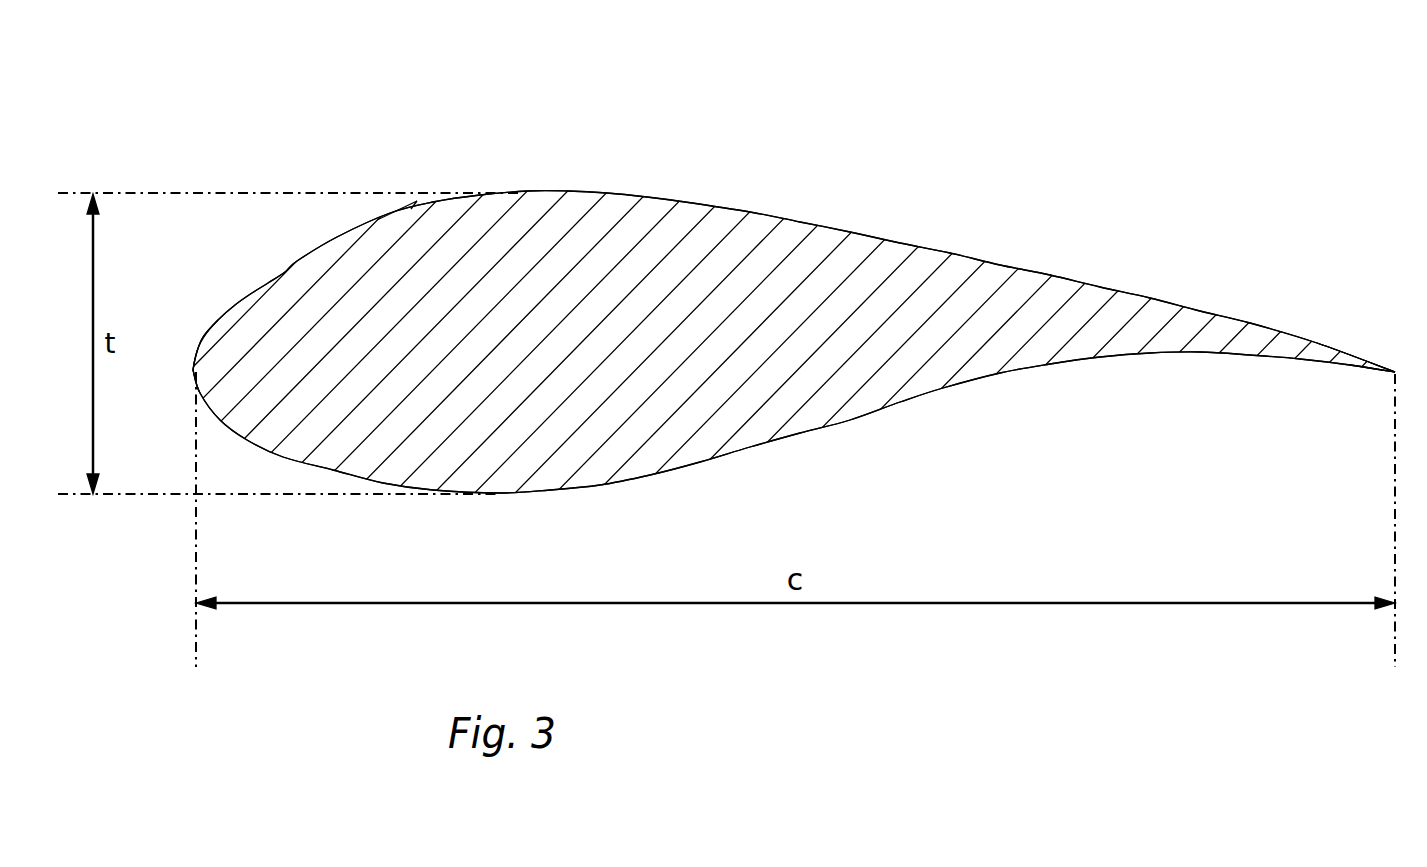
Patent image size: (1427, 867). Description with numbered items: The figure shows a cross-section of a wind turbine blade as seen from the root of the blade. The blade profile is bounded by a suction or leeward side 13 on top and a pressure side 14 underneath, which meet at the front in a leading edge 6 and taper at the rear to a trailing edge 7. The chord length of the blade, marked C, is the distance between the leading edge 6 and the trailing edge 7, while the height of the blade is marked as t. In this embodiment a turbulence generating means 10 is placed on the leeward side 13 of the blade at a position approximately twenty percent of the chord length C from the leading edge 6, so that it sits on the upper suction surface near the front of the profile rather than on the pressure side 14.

The turbulence generating means 10 is at (392, 193).
The suction/leeward side 13 is at (782, 213).
The pressure side 14 is at (943, 388).
The leading edge 6 is at (193, 368).
The trailing edge 7 is at (1395, 372).